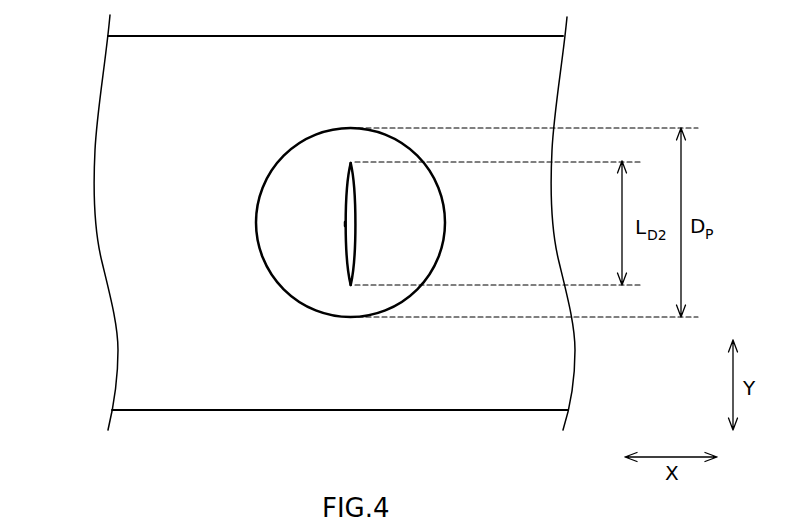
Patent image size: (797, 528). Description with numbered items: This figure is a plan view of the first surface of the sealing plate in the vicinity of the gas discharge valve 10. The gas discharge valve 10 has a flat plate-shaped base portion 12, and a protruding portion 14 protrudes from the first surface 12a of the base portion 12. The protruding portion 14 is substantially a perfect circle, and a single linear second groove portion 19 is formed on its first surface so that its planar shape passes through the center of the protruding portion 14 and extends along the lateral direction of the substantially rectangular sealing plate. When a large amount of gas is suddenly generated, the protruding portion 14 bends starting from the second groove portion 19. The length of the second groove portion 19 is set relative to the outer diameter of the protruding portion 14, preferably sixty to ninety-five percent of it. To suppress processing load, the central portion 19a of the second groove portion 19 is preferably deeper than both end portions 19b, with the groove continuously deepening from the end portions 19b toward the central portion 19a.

The gas discharge valve 10 is at (305, 108).
The base portion 12 is at (540, 70).
The first surface 12a is at (563, 223).
The protruding portion 14 is at (335, 310).
The second groove portion 19 is at (343, 204).
The central portion 19a is at (345, 228).
The end portions 19b is at (349, 163).